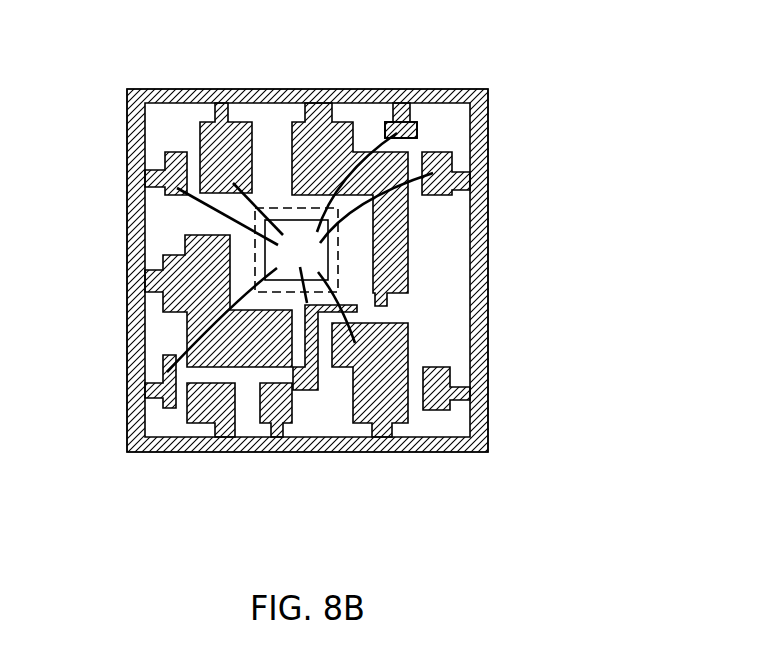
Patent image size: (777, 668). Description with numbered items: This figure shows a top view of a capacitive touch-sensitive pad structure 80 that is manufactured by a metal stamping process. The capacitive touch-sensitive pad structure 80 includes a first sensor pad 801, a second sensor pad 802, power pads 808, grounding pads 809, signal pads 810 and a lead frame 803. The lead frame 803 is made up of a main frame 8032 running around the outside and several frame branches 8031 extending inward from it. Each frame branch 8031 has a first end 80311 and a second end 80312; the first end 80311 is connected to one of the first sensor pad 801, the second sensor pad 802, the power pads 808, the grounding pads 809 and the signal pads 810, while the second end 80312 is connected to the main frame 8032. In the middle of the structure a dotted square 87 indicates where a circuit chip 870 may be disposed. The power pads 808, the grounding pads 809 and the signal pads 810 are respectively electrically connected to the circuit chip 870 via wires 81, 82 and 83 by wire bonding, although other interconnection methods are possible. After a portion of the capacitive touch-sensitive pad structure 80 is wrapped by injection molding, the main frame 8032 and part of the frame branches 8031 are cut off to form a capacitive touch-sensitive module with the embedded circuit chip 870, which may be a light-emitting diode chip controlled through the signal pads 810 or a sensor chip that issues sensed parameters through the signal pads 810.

The capacitive touch-sensitive pad structure 80 is at (483, 54).
The first sensor pad 801 is at (410, 228).
The second sensor pad 802 is at (195, 333).
The lead frame 803 is at (465, 502).
The frame branch 8031 is at (317, 112).
The first end 80311 is at (320, 123).
The second end 80312 is at (328, 127).
The main frame 8032 is at (358, 437).
The power pad 808 is at (212, 161).
The grounding pad 809 is at (417, 130).
The signal pad 810 is at (163, 166).
The wire 81 is at (283, 270).
The wire 82 is at (326, 320).
The wire 83 is at (245, 295).
The dotted square 87 is at (340, 270).
The circuit chip 870 is at (310, 292).